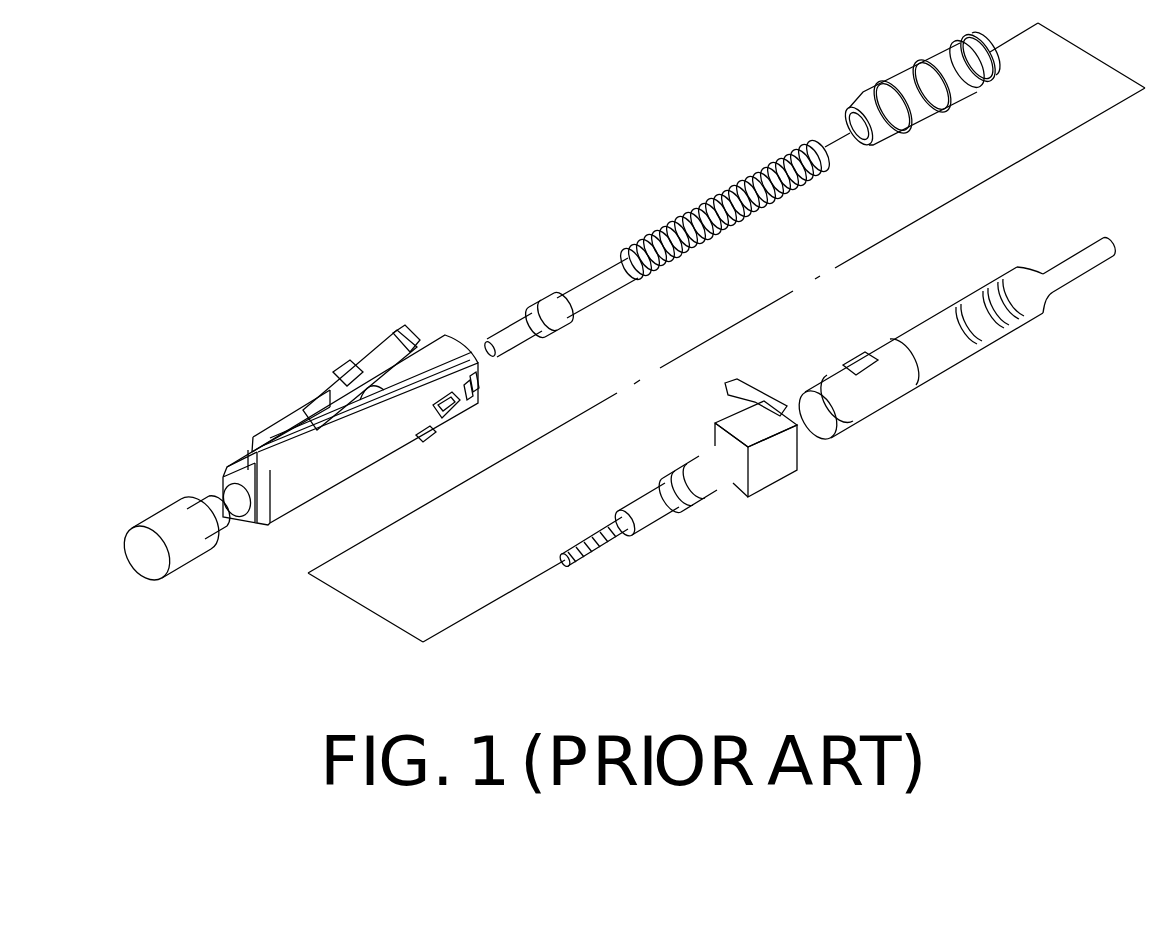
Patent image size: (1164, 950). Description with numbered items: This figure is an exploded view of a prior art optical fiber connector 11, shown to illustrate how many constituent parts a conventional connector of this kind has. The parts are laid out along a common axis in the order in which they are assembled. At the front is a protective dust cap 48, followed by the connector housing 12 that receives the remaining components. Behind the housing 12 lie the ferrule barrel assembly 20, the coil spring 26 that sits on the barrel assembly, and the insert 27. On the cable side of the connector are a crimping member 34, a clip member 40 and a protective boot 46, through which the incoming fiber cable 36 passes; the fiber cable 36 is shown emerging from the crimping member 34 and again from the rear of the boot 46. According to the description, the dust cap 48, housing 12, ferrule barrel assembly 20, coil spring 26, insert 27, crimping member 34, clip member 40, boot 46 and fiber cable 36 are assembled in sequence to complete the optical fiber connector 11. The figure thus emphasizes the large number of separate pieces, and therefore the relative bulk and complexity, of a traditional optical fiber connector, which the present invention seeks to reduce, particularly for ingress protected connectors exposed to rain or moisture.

The optical fiber connector 11 is at (368, 227).
The connector housing 12 is at (312, 481).
The ferrule barrel assembly 20 is at (588, 273).
The coil spring 26 is at (686, 220).
The insert 27 is at (888, 137).
The crimping member 34 is at (670, 507).
The incoming fiber cable 36 is at (623, 520).
The clip member 40 is at (785, 467).
The protective boot 46 is at (947, 350).
The protective dust cap 48 is at (168, 518).